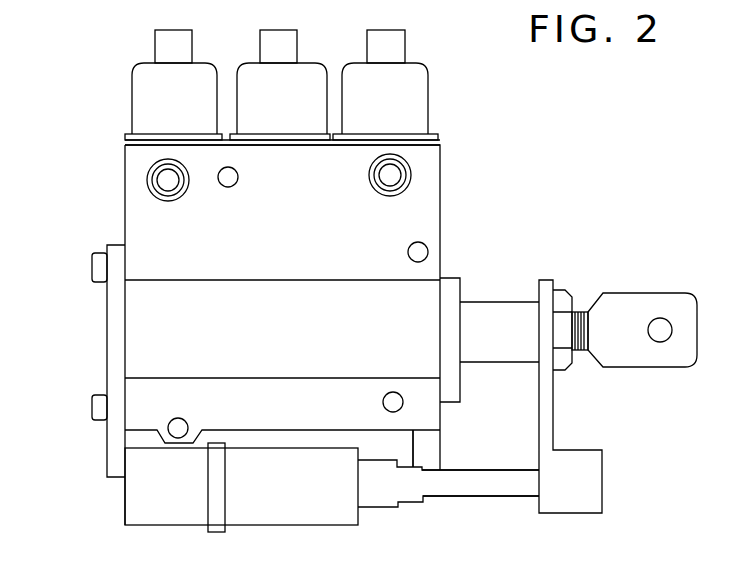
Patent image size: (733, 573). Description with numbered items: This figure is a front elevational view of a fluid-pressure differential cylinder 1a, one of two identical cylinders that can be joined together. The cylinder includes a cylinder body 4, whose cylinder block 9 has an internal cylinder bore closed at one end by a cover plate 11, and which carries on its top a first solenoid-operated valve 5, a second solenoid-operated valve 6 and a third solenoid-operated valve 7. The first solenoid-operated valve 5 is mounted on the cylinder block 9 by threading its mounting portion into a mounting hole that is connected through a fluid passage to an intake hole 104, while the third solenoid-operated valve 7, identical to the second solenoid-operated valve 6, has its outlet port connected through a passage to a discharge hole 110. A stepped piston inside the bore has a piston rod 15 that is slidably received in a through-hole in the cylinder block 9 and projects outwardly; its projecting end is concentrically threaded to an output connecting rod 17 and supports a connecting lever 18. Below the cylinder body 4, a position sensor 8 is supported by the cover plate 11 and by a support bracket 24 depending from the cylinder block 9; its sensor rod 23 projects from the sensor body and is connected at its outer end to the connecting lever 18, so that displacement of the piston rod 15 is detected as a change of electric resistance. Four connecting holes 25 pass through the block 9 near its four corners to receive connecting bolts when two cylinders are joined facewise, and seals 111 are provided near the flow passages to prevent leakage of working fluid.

The fluid-pressure differential cylinder 1a is at (118, 119).
The cylinder body 4 is at (120, 188).
The first solenoid-operated valve 5 is at (413, 72).
The second solenoid-operated valve 6 is at (308, 75).
The third solenoid-operated valve 7 is at (200, 75).
The position sensor 8 is at (282, 515).
The cylinder block 9 is at (137, 316).
The cover plate 11 is at (108, 338).
The piston rod 15 is at (497, 310).
The output connecting rod 17 is at (633, 305).
The connecting lever 18 is at (550, 413).
The sensor rod 23 is at (485, 487).
The support bracket 24 is at (434, 450).
The connecting holes 25 is at (228, 187).
The intake hole 104 is at (398, 173).
The discharge hole 110 is at (165, 175).
The seals 111 is at (160, 199).